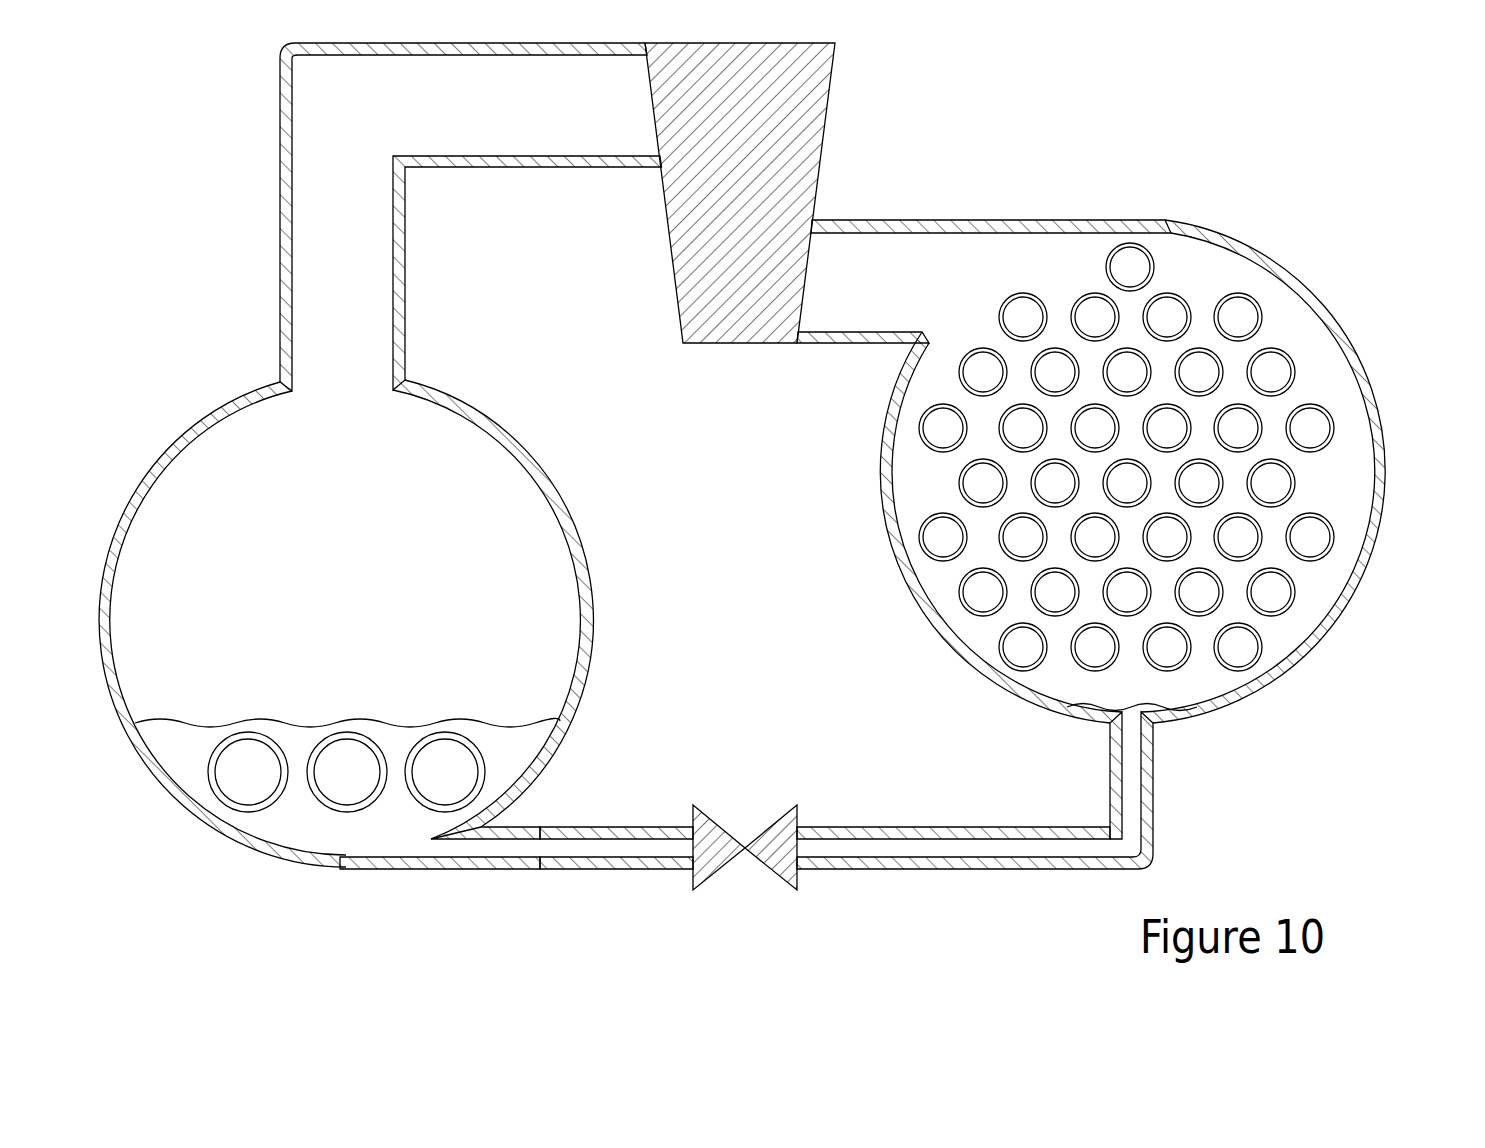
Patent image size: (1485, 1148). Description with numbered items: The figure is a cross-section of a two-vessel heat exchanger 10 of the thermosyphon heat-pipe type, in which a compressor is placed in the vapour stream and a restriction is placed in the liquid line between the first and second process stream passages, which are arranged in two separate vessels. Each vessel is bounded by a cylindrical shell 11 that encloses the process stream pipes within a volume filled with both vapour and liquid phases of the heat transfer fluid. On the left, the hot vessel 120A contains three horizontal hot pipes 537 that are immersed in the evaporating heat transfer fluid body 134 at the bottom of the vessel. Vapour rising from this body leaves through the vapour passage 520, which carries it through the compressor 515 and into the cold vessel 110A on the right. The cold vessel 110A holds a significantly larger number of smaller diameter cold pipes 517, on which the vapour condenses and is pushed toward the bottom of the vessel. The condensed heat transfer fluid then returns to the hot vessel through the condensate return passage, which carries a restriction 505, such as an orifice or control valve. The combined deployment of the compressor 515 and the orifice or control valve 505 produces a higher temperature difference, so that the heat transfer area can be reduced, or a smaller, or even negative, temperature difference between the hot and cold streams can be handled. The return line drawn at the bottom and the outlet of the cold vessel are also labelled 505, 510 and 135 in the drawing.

The heat exchanger 10 is at (783, 493).
The cylindrical shell 11 is at (200, 410).
The cold vessel 110A is at (1129, 485).
The hot vessel 120A is at (346, 657).
The evaporating heat transfer fluid body 134 is at (515, 752).
The drain outlet 135 is at (1173, 712).
The restriction 505 is at (790, 827).
The valve 510 is at (747, 828).
The compressor 515 is at (738, 343).
The cold pipes 517 is at (1282, 372).
The vapour passage 520 is at (305, 188).
The hot pipes 537 is at (247, 765).